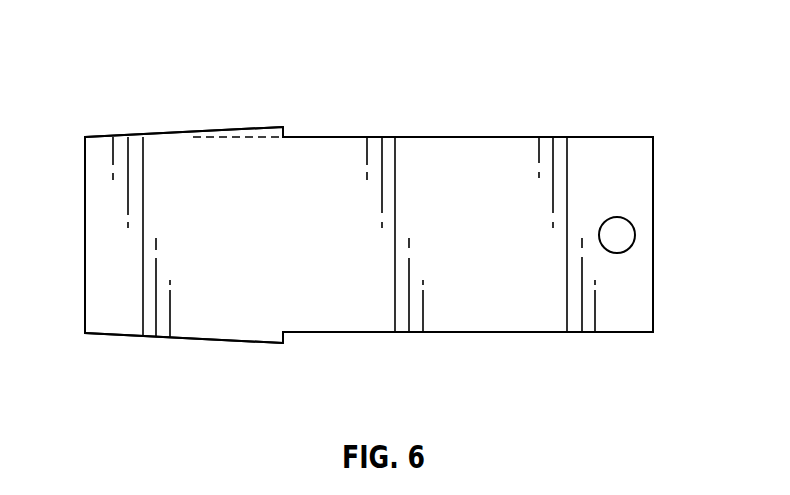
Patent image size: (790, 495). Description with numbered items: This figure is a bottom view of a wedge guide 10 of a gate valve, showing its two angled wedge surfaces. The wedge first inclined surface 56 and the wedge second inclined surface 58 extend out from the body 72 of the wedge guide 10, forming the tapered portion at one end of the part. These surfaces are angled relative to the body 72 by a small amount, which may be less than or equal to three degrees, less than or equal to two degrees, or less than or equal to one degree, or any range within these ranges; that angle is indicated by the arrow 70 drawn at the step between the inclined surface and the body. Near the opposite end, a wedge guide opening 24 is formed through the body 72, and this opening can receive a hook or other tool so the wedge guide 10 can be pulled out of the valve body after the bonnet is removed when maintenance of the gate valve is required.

The wedge guide 10 is at (128, 40).
The wedge first inclined surface 56 is at (188, 131).
The wedge second inclined surface 58 is at (215, 342).
The arrow 70 is at (222, 200).
The body 72 is at (423, 137).
The wedge guide opening 24 is at (617, 225).